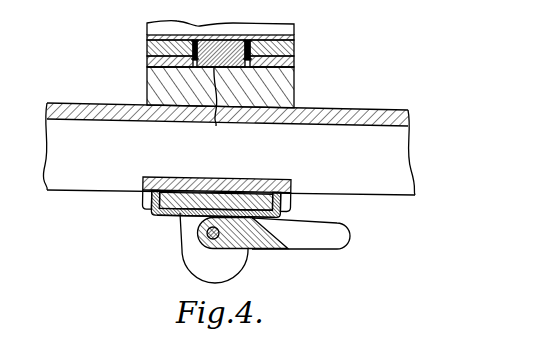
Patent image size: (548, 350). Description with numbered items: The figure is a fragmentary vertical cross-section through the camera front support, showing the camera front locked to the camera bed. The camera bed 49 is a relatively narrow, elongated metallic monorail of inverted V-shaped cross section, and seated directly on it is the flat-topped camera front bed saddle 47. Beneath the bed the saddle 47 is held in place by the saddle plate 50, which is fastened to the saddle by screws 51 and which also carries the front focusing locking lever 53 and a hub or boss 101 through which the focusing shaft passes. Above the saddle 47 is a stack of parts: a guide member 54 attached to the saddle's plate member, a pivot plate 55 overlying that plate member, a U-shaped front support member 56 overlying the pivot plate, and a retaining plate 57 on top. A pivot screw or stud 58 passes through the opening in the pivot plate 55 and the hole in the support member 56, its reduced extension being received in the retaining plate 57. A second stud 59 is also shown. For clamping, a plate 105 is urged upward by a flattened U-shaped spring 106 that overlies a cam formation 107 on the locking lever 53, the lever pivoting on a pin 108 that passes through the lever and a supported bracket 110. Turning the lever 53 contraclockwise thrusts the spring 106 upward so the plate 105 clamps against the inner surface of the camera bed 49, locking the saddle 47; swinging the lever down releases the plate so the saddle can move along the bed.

The camera front bed saddle 47 is at (294, 92).
The camera bed 49 is at (410, 155).
The saddle plate 50 is at (143, 198).
The screws 51 is at (150, 208).
The front focusing locking lever 53 is at (351, 237).
The guide member 54 is at (294, 63).
The pivot plate 55 is at (150, 61).
The U-shaped front support member 56 is at (294, 32).
The retaining plate 57 is at (187, 35).
The pivot screw or stud 58 is at (221, 105).
The second bolt 59 is at (230, 35).
The hub or boss 101 is at (237, 265).
The plate 105 is at (250, 167).
The flattened U-shaped spring 106 is at (170, 213).
The cam formation 107 is at (186, 265).
The pin 108 is at (219, 233).
The bracket 110 is at (200, 216).